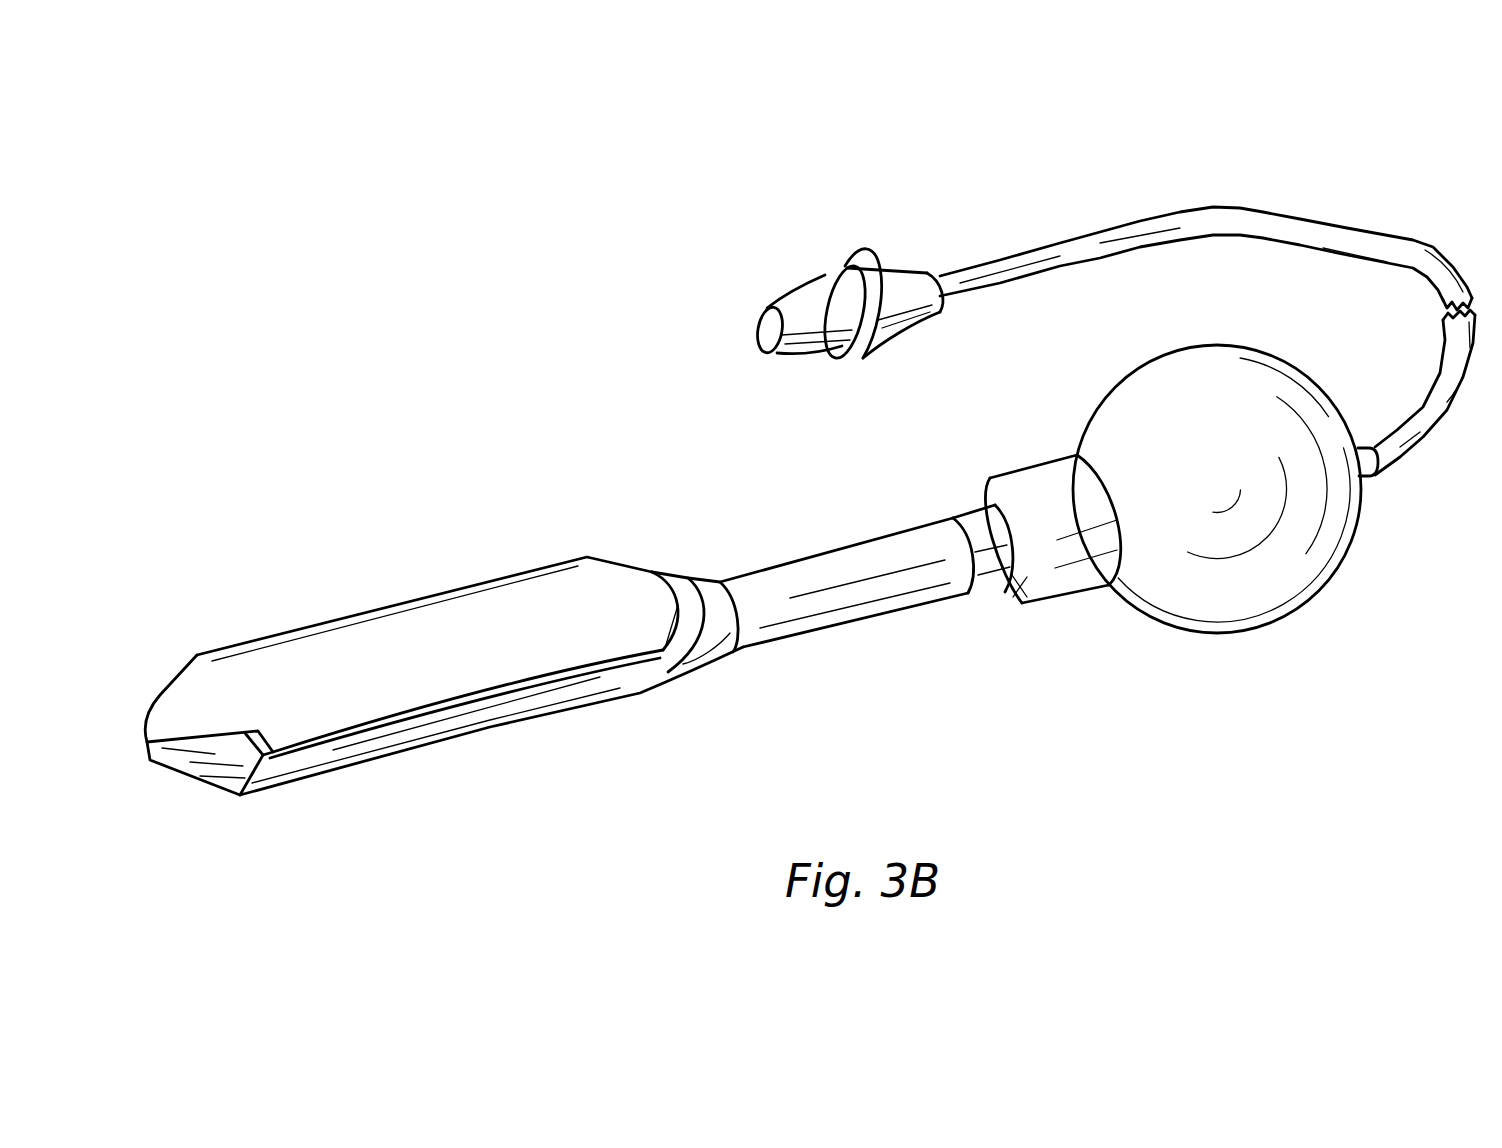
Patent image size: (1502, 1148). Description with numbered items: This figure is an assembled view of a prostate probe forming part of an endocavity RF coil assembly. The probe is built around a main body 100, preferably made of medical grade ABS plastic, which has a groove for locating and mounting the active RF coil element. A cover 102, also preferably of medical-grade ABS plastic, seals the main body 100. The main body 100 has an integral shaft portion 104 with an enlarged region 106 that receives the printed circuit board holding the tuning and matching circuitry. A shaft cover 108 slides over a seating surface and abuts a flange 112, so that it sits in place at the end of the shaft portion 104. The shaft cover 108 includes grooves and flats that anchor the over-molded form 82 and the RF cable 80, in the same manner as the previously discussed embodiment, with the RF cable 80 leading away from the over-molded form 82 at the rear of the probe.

The RF cable 80 is at (1297, 223).
The over-molded form 82 is at (1297, 587).
The main body 100 is at (707, 667).
The cover 102 is at (452, 603).
The shaft portion 104 is at (895, 540).
The enlarged region 106 is at (988, 578).
The shaft cover 108 is at (1043, 487).
The flange 112 is at (1014, 595).